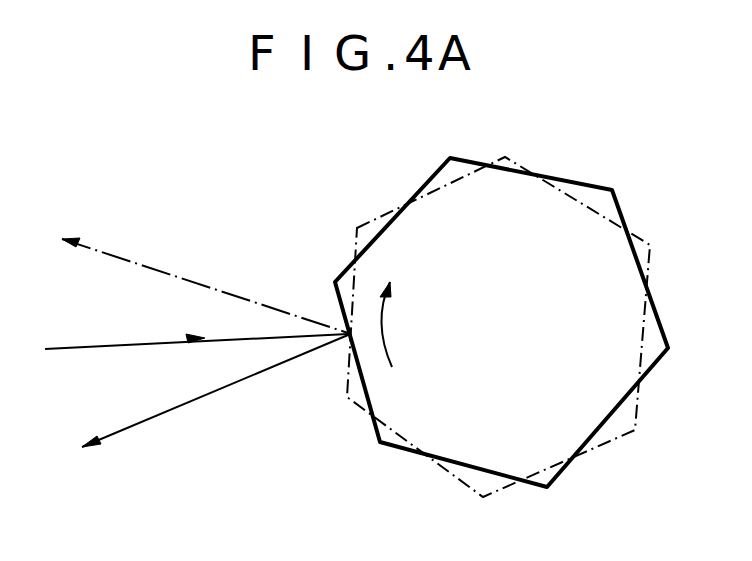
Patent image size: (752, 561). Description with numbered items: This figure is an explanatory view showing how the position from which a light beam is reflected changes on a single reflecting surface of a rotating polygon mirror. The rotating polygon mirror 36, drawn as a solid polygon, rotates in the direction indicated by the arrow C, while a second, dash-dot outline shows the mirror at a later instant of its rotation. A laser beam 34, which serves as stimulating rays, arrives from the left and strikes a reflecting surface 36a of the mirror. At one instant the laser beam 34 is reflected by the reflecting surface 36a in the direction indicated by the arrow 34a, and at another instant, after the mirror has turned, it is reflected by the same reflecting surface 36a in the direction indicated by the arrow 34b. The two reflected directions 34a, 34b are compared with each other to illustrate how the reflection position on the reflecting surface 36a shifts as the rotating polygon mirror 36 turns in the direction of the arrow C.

The laser beam 34 is at (100, 346).
The arrow indicating reflected direction 34a is at (148, 419).
The arrow indicating reflected direction 34b is at (174, 275).
The rotating polygon mirror 36 is at (607, 190).
The reflecting surface 36a is at (350, 392).
The arrow indicating direction of rotation C is at (400, 324).